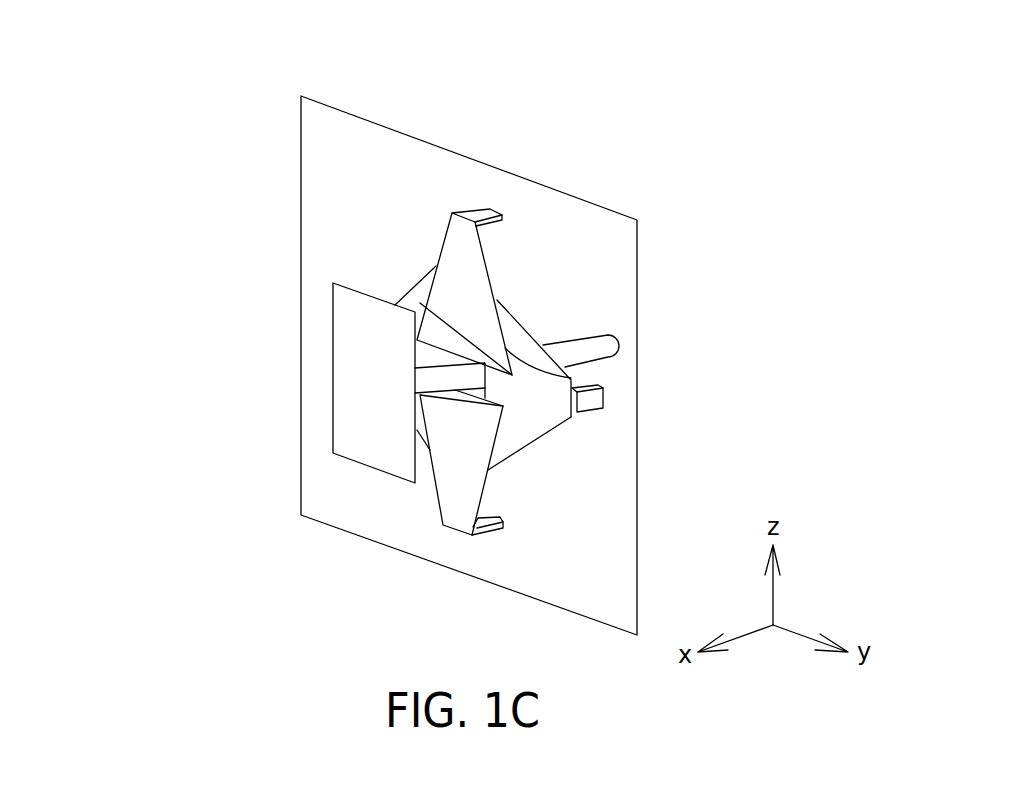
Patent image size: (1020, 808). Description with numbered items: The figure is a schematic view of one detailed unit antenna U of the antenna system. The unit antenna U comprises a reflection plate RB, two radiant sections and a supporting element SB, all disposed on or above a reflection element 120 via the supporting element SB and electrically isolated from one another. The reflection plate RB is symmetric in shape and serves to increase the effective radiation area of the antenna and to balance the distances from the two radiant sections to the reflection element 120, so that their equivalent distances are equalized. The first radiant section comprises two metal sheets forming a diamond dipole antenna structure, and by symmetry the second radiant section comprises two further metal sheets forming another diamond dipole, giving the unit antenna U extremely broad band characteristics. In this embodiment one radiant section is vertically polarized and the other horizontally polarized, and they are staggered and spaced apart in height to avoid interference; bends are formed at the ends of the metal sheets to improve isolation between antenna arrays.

The unit antenna U is at (655, 100).
The reflection element 120 is at (363, 152).
The reflection plate RB is at (363, 373).
The supporting element SB is at (585, 348).